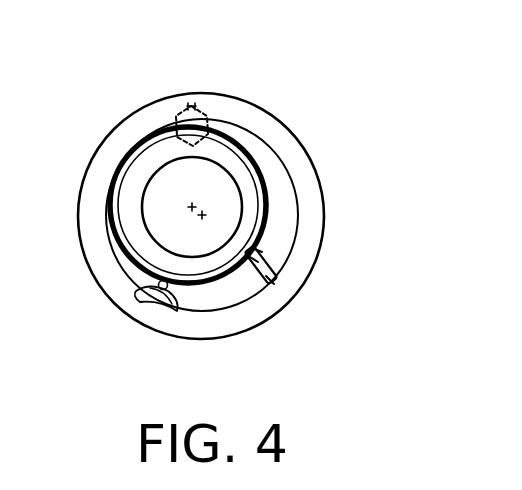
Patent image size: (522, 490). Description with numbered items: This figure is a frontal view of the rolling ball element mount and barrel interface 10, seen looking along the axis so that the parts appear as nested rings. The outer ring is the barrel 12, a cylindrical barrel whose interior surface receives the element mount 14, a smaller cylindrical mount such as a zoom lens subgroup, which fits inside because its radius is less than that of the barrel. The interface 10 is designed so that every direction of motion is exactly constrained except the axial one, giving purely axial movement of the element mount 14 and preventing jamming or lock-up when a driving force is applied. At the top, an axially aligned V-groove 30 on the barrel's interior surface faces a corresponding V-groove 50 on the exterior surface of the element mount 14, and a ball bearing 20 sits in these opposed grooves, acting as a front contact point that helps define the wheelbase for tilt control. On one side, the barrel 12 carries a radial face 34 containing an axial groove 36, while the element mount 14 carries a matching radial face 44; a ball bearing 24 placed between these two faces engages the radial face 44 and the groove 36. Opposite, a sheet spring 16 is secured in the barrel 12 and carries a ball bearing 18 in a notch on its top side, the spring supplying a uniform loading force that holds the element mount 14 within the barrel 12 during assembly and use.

The rolling ball element mount and barrel interface 10 is at (366, 61).
The barrel 12 is at (300, 158).
The element mount 14 is at (260, 197).
The sheet spring 16 is at (157, 320).
The ball bearing 18 is at (157, 299).
The ball bearing 20 is at (197, 124).
The ball bearing 24 is at (278, 269).
The V-groove 30 is at (190, 105).
The radial face 34 is at (270, 282).
The groove 36 is at (268, 255).
The radial face 44 is at (250, 258).
The V-groove 50 is at (183, 146).